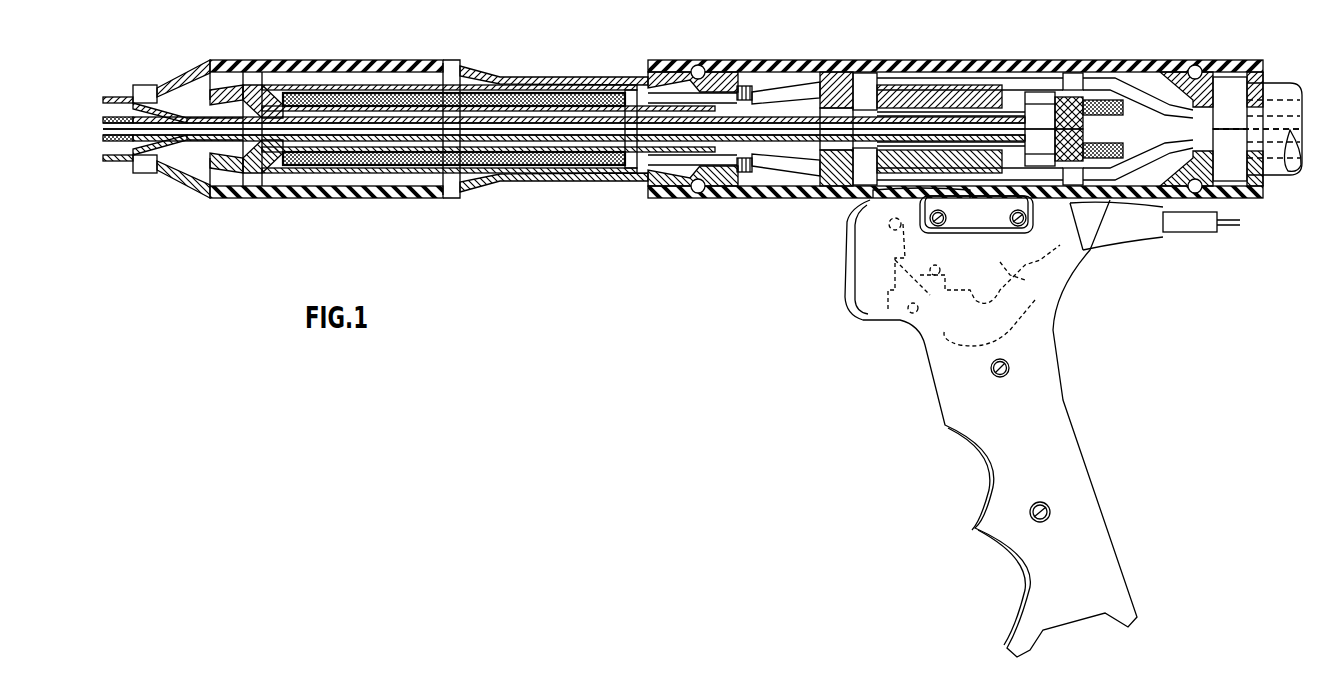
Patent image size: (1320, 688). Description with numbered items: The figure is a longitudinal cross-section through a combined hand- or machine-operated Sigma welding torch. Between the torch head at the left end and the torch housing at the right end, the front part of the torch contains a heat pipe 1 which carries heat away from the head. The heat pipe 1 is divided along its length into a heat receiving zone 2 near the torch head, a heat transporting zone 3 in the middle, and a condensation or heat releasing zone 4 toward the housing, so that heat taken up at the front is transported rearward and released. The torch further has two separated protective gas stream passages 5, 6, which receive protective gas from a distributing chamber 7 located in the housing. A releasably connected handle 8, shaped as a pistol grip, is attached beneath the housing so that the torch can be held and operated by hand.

The heat pipe 1 is at (575, 90).
The heat receiving zone 2 is at (313, 88).
The heat transporting zone 3 is at (410, 100).
The condensation or heat releasing zone 4 is at (512, 92).
The protective gas stream passage 5 is at (783, 93).
The protective gas stream passage 6 is at (870, 142).
The distributing chamber 7 is at (867, 80).
The handle 8 is at (1063, 410).